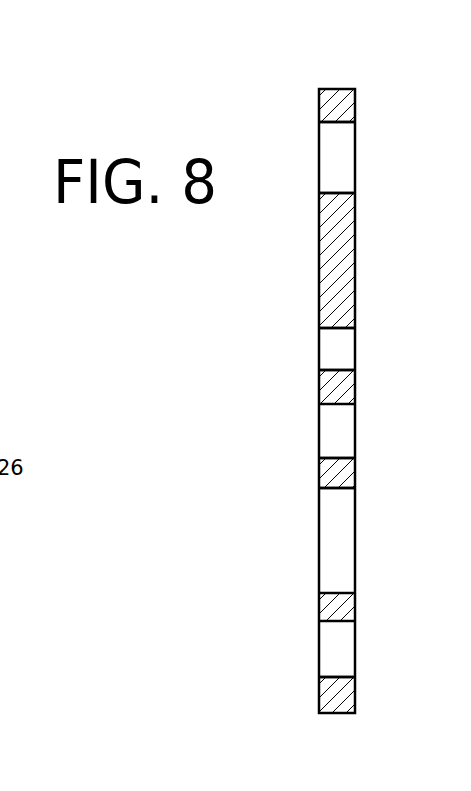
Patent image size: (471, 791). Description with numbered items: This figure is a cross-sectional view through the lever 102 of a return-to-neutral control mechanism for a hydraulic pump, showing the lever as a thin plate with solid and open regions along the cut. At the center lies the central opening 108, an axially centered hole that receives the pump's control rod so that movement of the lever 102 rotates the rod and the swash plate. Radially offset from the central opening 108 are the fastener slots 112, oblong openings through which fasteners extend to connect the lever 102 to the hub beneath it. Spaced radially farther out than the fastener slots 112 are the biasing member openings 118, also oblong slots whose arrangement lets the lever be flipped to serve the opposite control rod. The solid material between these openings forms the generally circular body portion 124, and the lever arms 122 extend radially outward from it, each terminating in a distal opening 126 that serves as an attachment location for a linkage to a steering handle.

The lever 102 is at (262, 110).
The distal openings 126 is at (343, 153).
The lever arms 122 is at (345, 233).
The biasing member openings 118 is at (349, 347).
The fastener slots 112 is at (342, 433).
The body portion 124 is at (345, 475).
The central opening 108 is at (342, 547).